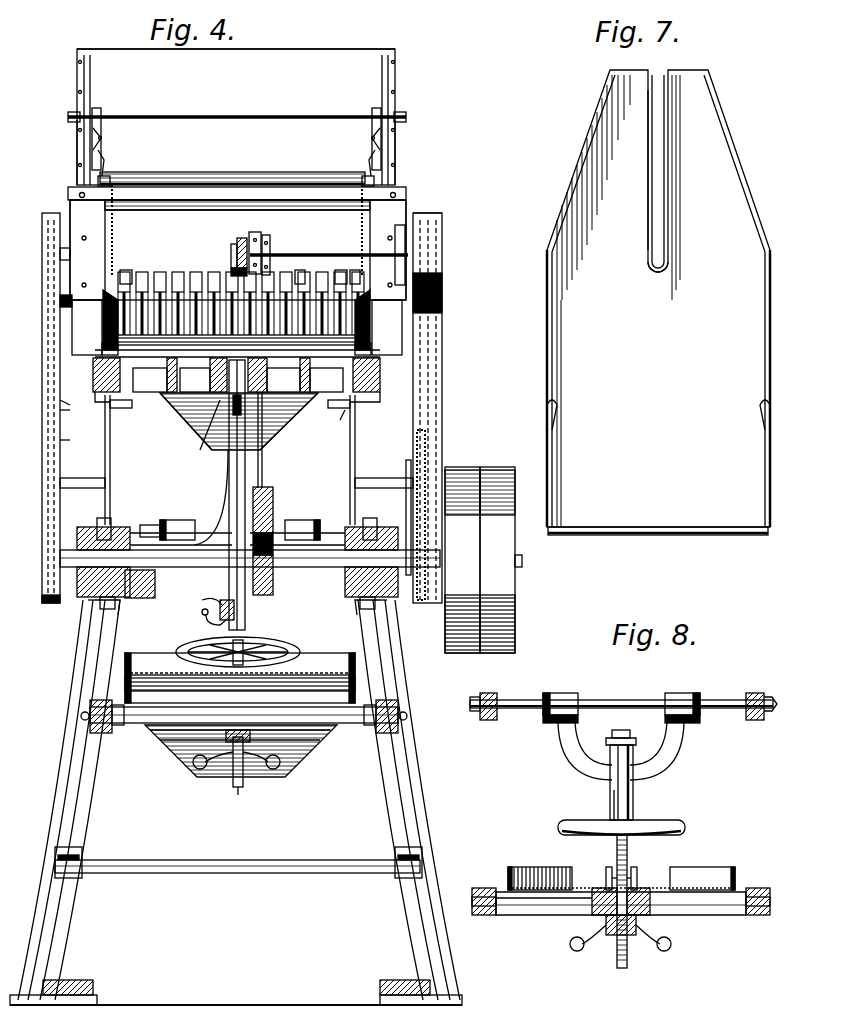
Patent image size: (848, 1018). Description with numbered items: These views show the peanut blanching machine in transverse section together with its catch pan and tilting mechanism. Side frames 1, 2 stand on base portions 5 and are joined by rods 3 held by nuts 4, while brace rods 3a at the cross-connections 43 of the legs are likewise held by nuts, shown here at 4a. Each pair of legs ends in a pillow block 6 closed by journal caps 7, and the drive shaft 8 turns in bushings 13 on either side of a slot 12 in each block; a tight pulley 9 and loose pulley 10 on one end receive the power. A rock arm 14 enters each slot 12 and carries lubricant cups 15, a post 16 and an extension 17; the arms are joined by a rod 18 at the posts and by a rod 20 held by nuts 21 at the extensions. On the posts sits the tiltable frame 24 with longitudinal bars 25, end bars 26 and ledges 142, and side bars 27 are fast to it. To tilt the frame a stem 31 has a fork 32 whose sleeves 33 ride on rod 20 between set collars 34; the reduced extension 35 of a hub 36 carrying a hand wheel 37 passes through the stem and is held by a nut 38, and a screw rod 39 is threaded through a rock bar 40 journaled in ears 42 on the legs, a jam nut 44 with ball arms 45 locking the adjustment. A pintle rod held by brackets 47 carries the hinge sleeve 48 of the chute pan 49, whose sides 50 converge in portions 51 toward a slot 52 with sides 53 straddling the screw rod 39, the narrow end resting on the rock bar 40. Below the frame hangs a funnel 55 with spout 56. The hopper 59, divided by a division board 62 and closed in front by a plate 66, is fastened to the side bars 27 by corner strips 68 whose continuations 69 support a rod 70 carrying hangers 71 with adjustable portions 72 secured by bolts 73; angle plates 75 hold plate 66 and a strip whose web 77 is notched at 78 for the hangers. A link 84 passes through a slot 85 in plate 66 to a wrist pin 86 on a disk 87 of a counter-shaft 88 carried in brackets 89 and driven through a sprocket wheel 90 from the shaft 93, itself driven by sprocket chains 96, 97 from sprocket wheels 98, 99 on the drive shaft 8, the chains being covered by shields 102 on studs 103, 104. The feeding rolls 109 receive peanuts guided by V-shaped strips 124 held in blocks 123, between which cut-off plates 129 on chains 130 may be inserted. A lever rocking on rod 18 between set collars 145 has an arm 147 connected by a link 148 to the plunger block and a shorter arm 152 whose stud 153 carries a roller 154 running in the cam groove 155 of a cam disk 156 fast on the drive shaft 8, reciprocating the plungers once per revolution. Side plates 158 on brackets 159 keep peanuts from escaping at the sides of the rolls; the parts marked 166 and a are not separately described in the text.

In FIG. 4, the side frame 1 is at (410, 925).
In FIG. 4, the side frame 2 is at (75, 910).
In FIG. 4, the rod 3 is at (210, 873).
In FIG. 4, the rod 3a is at (160, 715).
In FIG. 4, the nut 4 is at (55, 856).
In FIG. 4, the hub 4a is at (84, 722).
In FIG. 4, the base portion 5 is at (75, 990).
In FIG. 4, the pillow block 6 is at (85, 608).
In FIG. 4, the journal cap 7 is at (80, 530).
In FIG. 4, the drive shaft 8 is at (140, 584).
In FIG. 4, the tight pulley 9 is at (455, 653).
In FIG. 4, the loose pulley 10 is at (502, 653).
In FIG. 4, the slot 12 is at (95, 605).
In FIG. 4, the journal bushing 13 is at (115, 602).
In FIG. 4, the rock arm 14 is at (112, 612).
In FIG. 4, the lubricant cup 15 is at (110, 522).
In FIG. 4, the post 16 is at (106, 438).
In FIG. 8, the extension 17 is at (489, 693).
In FIG. 4, the rod 18 is at (149, 518).
In FIG. 4, the rod 20 is at (135, 520).
In FIG. 8, the rod 20 is at (522, 710).
In FIG. 8, the nut 21 is at (470, 706).
In FIG. 4, the frame 24 is at (341, 424).
In FIG. 4, the interior bar 25 is at (175, 408).
In FIG. 4, the bar 26 is at (238, 375).
In FIG. 4, the side bar 27 is at (92, 380).
In FIG. 8, the stem 31 is at (634, 782).
In FIG. 4, the fork 32 is at (228, 590).
In FIG. 8, the fork 32 is at (578, 748).
In FIG. 4, the sleeve 33 is at (182, 520).
In FIG. 8, the sleeve 33 is at (572, 697).
In FIG. 4, the set collar 34 is at (162, 520).
In FIG. 8, the set collar 34 is at (548, 697).
In FIG. 8, the reduced axial extension 35 is at (624, 725).
In FIG. 8, the hub 36 is at (612, 808).
In FIG. 4, the hand wheel 37 is at (285, 645).
In FIG. 8, the hand wheel 37 is at (660, 822).
In FIG. 8, the nut 38 is at (612, 738).
In FIG. 4, the screw rod 39 is at (238, 790).
In FIG. 8, the screw rod 39 is at (617, 852).
In FIG. 4, the rock bar 40 is at (168, 732).
In FIG. 8, the rock bar 40 is at (680, 905).
In FIG. 8, the ear 42 is at (482, 888).
In FIG. 4, the cross-connection 43 is at (100, 735).
In FIG. 4, the jam nut 44 is at (228, 760).
In FIG. 8, the jam nut 44 is at (612, 935).
In FIG. 4, the ball arm 45 is at (200, 770).
In FIG. 8, the ball arm 45 is at (570, 944).
In FIG. 8, the bracket 47 is at (486, 915).
In FIG. 7, the hinge sleeve 48 is at (657, 535).
In FIG. 4, the chute pan 49 is at (172, 745).
In FIG. 7, the chute pan 49 is at (658, 298).
In FIG. 8, the chute pan 49 is at (545, 905).
In FIG. 4, the upstanding side 50 is at (393, 672).
In FIG. 7, the upstanding side 50 is at (546, 360).
In FIG. 8, the upstanding side 50 is at (509, 868).
In FIG. 4, the approaching portion 51 is at (178, 742).
In FIG. 7, the approaching portion 51 is at (578, 162).
In FIG. 8, the approaching portion 51 is at (560, 867).
In FIG. 4, the longitudinal slot 52 is at (245, 790).
In FIG. 7, the longitudinal slot 52 is at (660, 138).
In FIG. 8, the longitudinal slot 52 is at (634, 867).
In FIG. 4, the upstanding side 53 is at (245, 658).
In FIG. 7, the upstanding side 53 is at (652, 225).
In FIG. 8, the upstanding side 53 is at (637, 875).
In FIG. 4, the funnel 55 is at (190, 418).
In FIG. 4, the spout continuation 56 is at (215, 468).
In FIG. 4, the hopper 59 is at (236, 39).
In FIG. 4, the division board 62 is at (236, 117).
In FIG. 4, the plate 66 is at (237, 243).
In FIG. 4, the corner strip 68 is at (60, 300).
In FIG. 4, the upstanding continuation 69 is at (77, 148).
In FIG. 4, the rod 70 is at (275, 116).
In FIG. 4, the hanger 71 is at (77, 172).
In FIG. 4, the separate portion 72 is at (97, 112).
In FIG. 4, the bolt 73 is at (102, 139).
In FIG. 4, the angle plate 75 is at (238, 247).
In FIG. 4, the web 77 is at (236, 178).
In FIG. 4, the notch 78 is at (106, 170).
In FIG. 4, the link 84 is at (231, 248).
In FIG. 4, the slot 85 is at (238, 240).
In FIG. 4, the wrist pin 86 is at (231, 270).
In FIG. 4, the disk 87 is at (252, 232).
In FIG. 4, the counter-shaft 88 is at (316, 253).
In FIG. 4, the bracket 89 is at (453, 234).
In FIG. 4, the sprocket wheel 90 is at (430, 213).
In FIG. 4, the shaft 93 is at (62, 258).
In FIG. 4, the sprocket chain 96 is at (425, 462).
In FIG. 4, the sprocket chain 97 is at (58, 440).
In FIG. 4, the sprocket wheel 98 is at (426, 588).
In FIG. 4, the sprocket wheel 99 is at (44, 580).
In FIG. 4, the shield 102 is at (44, 415).
In FIG. 4, the stud 103 is at (72, 478).
In FIG. 4, the stud 104 is at (102, 315).
In FIG. 4, the roll 109 is at (150, 290).
In FIG. 4, the block 123 is at (297, 271).
In FIG. 4, the V-shaped strip 124 is at (364, 279).
In FIG. 4, the cut-off plate 129 is at (90, 270).
In FIG. 4, the chain 130 is at (113, 210).
In FIG. 4, the supporting ledge 142 is at (203, 375).
In FIG. 4, the set collar 145 is at (200, 530).
In FIG. 4, the arm 147 is at (263, 460).
In FIG. 4, the link 148 is at (195, 420).
In FIG. 4, the shorter arm 152 is at (202, 598).
In FIG. 4, the stud 153 is at (206, 618).
In FIG. 4, the roller 154 is at (246, 612).
In FIG. 4, the cam groove 155 is at (280, 598).
In FIG. 4, the cam disk 156 is at (268, 490).
In FIG. 4, the side plate 158 is at (100, 320).
In FIG. 4, the bracket 159 is at (100, 350).
In FIG. 4, the pin 166 is at (65, 421).
In FIG. 4, the pin a is at (55, 328).